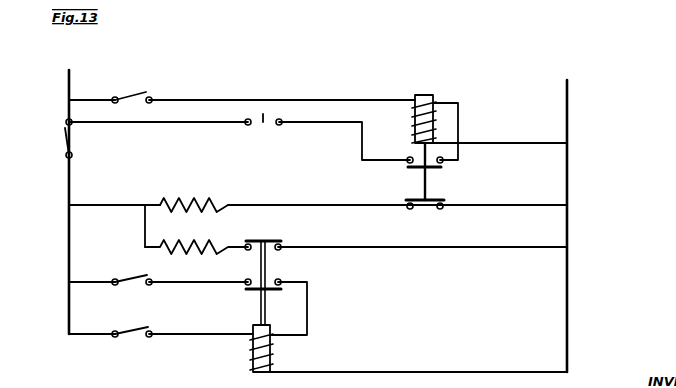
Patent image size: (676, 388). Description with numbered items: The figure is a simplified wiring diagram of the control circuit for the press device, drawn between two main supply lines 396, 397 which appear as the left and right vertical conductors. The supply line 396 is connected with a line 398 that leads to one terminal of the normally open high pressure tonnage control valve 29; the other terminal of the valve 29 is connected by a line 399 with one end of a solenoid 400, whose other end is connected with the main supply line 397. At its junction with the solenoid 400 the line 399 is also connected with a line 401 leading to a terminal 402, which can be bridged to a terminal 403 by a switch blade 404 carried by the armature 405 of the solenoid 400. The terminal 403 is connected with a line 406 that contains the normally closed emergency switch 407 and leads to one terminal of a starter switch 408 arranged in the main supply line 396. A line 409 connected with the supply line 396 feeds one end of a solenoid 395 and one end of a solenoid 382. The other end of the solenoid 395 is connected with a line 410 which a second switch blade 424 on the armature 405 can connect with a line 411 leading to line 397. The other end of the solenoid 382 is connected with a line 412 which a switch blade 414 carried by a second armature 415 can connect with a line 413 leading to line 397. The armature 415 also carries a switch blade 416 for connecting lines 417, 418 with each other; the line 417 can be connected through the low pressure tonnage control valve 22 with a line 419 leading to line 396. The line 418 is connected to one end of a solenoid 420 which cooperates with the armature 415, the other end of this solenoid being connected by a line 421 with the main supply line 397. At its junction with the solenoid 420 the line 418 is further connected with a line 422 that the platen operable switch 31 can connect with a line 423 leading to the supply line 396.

The main supply line 396 is at (66, 72).
The main supply line 397 is at (567, 100).
The line 398 is at (88, 97).
The high pressure tonnage control valve 29 is at (135, 90).
The line 399 is at (210, 97).
The starter switch 408 is at (60, 145).
The line 406 is at (362, 148).
The emergency switch 407 is at (250, 128).
The solenoid 400 is at (425, 100).
The line 401 is at (458, 128).
The terminal 402 is at (444, 164).
The terminal 403 is at (405, 164).
The switch blade 404 is at (436, 172).
The armature 405 is at (428, 190).
The switch blade 424 is at (418, 210).
The line 411 is at (518, 206).
The line 409 is at (98, 203).
The solenoid 395 is at (188, 198).
The line 410 is at (324, 192).
The solenoid 382 is at (186, 242).
The line 412 is at (238, 244).
The switch blade 414 is at (272, 240).
The line 413 is at (432, 250).
The armature 415 is at (266, 264).
The switch blade 416 is at (250, 292).
The line 418 is at (307, 312).
The line 419 is at (100, 272).
The low pressure tonnage control valve 22 is at (142, 268).
The line 417 is at (210, 272).
The line 423 is at (106, 336).
The platen operable switch 31 is at (143, 314).
The line 422 is at (172, 342).
The solenoid 420 is at (252, 362).
The line 421 is at (376, 372).